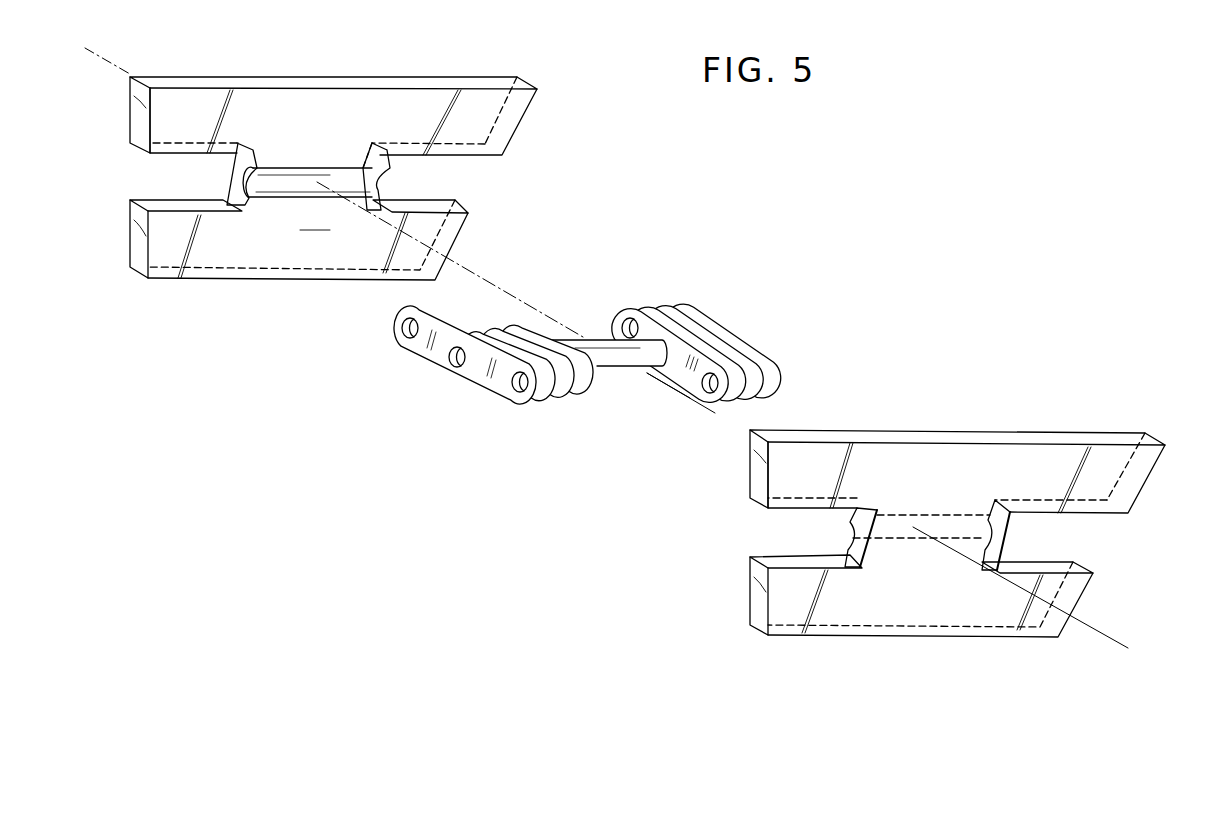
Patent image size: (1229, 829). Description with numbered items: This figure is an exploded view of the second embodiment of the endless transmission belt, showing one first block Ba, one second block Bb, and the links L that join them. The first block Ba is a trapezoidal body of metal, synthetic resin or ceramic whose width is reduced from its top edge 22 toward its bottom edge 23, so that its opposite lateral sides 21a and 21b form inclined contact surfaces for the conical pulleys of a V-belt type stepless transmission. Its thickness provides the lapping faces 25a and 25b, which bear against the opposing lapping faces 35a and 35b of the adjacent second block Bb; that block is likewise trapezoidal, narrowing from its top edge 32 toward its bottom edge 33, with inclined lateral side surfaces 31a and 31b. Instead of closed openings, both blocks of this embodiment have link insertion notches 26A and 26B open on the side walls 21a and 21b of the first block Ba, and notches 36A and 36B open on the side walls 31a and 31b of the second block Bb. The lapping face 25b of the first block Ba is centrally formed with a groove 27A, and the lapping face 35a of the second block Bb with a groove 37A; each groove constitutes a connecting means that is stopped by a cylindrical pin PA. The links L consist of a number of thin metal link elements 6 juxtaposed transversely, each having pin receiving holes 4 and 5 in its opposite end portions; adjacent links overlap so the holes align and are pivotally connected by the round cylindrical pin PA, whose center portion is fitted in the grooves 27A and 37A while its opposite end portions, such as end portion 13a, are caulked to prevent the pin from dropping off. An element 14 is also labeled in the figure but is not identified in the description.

The top edge 22 is at (340, 93).
The bottom edge 23 is at (299, 266).
The lateral side 21a is at (142, 122).
The lateral side 21b is at (507, 117).
The outer lapping face 25a is at (241, 98).
The inner lapping face 25b is at (348, 255).
The first block Ba is at (435, 97).
The link insertion notch 26A is at (165, 178).
The link insertion notch 26B is at (422, 180).
The groove 27A is at (272, 186).
The pin receiving hole 4 is at (478, 379).
The pin receiving hole 5 is at (465, 375).
The link element 6 is at (540, 392).
The end portion of terminal cylindrical pin 13a is at (442, 364).
The connecting pin 14 is at (597, 337).
The cylindrical pin PA is at (610, 368).
The link L is at (777, 350).
The top edge 32 is at (959, 448).
The bottom edge 33 is at (921, 626).
The lateral side surface 31a is at (758, 473).
The lateral side surface 31b is at (1135, 475).
The lapping face 35a is at (884, 453).
The lapping face 35b is at (970, 600).
The second block Bb is at (1052, 450).
The link insertion notch 36A is at (787, 542).
The link insertion notch 36B is at (1037, 550).
The groove 37A is at (857, 518).